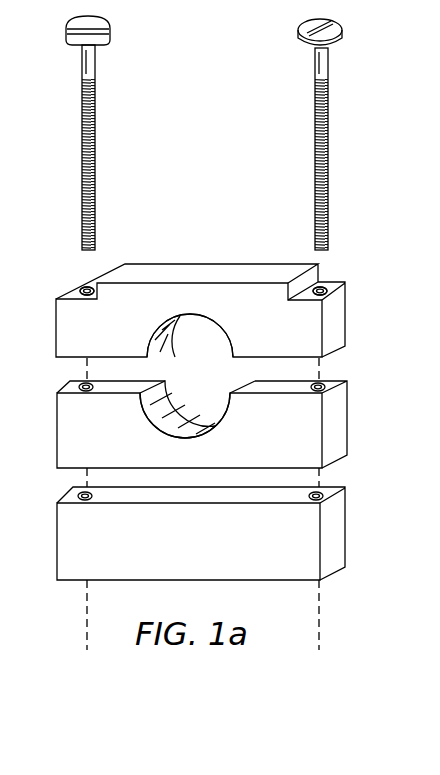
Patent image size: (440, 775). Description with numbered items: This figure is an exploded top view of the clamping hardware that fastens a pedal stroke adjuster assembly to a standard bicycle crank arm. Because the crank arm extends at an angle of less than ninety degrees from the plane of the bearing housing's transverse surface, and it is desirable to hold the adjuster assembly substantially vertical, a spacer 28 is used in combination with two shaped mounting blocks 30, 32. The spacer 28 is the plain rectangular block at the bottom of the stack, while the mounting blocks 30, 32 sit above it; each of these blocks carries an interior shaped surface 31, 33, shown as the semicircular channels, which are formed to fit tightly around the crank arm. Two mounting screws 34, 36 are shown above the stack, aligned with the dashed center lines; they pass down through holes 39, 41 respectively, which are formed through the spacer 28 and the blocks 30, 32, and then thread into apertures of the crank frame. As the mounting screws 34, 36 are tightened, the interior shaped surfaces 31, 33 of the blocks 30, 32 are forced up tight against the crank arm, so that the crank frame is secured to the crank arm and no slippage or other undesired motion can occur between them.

The spacer 28 is at (58, 518).
The shaped mounting block 30 is at (57, 426).
The shaped surface 31 is at (178, 410).
The shaped mounting block 32 is at (57, 333).
The shaped surface 33 is at (190, 318).
The mounting screw 34 is at (315, 192).
The mounting screw 36 is at (94, 199).
The hole 39 is at (323, 276).
The hole 41 is at (90, 276).